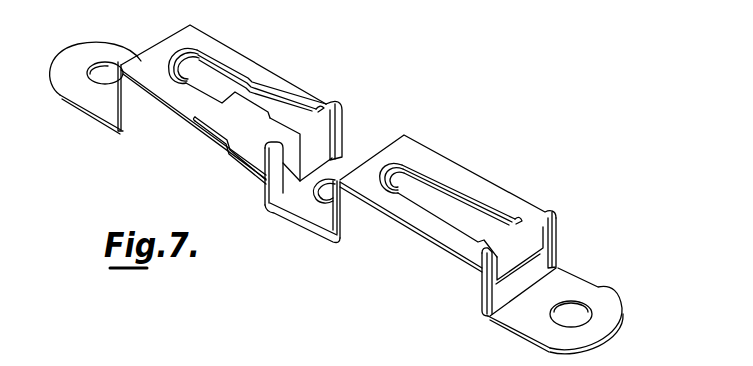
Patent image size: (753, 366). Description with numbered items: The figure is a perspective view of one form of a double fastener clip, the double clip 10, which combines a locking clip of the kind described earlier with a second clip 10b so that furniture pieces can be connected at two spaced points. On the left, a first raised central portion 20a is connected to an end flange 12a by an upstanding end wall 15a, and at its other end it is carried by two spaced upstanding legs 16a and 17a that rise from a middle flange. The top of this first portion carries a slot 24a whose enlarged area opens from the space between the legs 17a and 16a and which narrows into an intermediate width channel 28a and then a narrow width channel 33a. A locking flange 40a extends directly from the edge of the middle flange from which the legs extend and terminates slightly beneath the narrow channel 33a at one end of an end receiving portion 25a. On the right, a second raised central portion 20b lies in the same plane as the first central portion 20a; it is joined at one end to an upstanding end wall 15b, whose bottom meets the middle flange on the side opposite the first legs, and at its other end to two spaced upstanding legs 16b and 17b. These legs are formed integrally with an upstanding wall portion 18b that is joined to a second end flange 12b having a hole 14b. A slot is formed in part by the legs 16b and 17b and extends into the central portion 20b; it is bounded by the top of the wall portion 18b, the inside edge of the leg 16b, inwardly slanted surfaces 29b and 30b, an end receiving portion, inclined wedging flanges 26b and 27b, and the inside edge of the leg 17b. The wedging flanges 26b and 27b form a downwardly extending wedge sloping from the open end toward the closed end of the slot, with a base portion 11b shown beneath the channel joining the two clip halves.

The double clip 10 is at (396, 110).
The second clip 10b is at (531, 167).
The base web 11b is at (307, 207).
The end flange 12a is at (83, 88).
The second end flange 12b is at (528, 322).
The hole 14b is at (576, 311).
The upstanding end wall 15a is at (128, 92).
The upstanding end wall 15b is at (345, 210).
The upstanding leg 16a is at (342, 130).
The upstanding leg 16b is at (553, 234).
The upstanding leg 17a is at (276, 172).
The upstanding leg 17b is at (483, 300).
The upstanding wall portion 18b is at (541, 264).
The first raised central portion 20a is at (194, 40).
The second raised central portion 20b is at (400, 153).
The slot 24a is at (307, 128).
The end receiving portion 25a is at (186, 80).
The inclined wedging flange 26b is at (457, 192).
The inclined wedging flange 27b is at (444, 210).
The intermediate width channel 28a is at (271, 104).
The inwardly slanted surface 29b is at (536, 208).
The inwardly slanted surface 30b is at (466, 243).
The narrow width channel 33a is at (210, 84).
The locking flange 40a is at (250, 150).